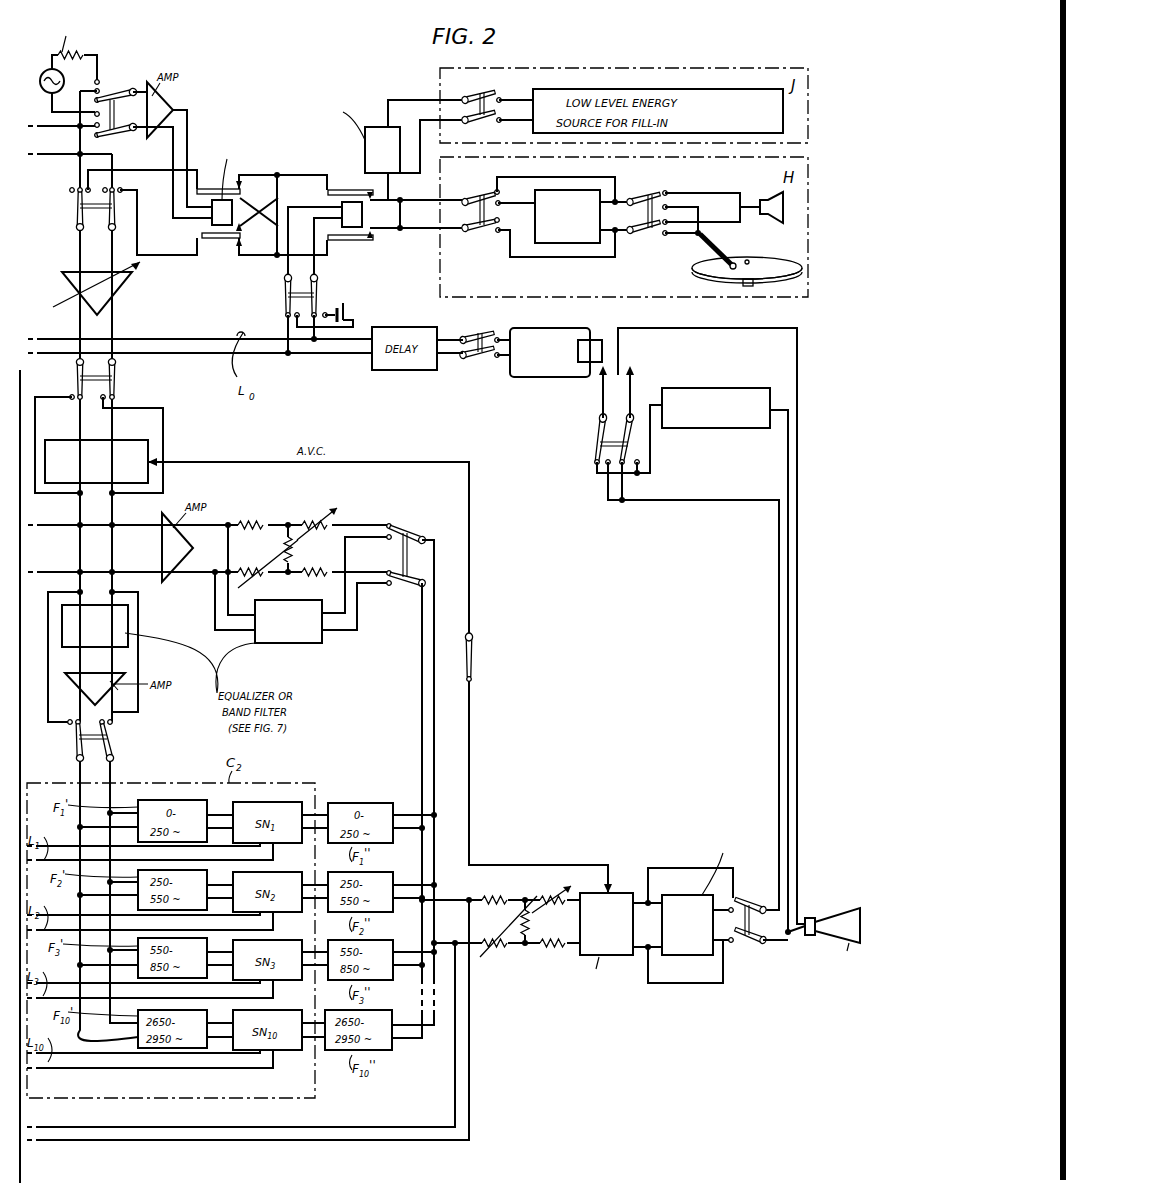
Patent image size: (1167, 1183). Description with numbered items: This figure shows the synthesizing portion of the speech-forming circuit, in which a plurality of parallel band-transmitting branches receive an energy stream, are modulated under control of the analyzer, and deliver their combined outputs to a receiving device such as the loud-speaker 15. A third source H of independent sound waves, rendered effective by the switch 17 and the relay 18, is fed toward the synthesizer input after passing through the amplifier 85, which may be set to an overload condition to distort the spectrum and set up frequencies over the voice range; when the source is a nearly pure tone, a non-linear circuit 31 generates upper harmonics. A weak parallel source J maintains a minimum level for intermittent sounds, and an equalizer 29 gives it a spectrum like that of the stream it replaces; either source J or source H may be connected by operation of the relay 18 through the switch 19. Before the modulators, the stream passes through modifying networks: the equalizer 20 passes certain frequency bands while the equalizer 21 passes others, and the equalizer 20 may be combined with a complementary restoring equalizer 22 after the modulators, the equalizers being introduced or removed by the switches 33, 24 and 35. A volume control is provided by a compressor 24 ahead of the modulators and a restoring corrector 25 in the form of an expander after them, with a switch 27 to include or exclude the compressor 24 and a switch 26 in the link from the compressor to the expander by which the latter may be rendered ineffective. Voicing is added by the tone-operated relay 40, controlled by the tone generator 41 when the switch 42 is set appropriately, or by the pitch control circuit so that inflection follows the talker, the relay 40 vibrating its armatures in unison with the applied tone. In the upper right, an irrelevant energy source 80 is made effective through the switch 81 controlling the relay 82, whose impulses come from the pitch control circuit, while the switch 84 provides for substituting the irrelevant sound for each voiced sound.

The loud-speaker 15 is at (834, 917).
The switch 17 is at (86, 220).
The relay 18 is at (356, 232).
The switch 19 is at (288, 290).
The equalizer 20 is at (128, 623).
The equalizer 21 is at (300, 643).
The restoring equalizer 22 is at (672, 955).
The compressor 24 is at (128, 440).
The restoring corrector 25 is at (620, 893).
The switch 26 is at (473, 658).
The switch 27 is at (104, 391).
The equalizer 29 is at (372, 127).
The non-linear circuit 31 is at (566, 243).
The switch 33 is at (100, 753).
The switch 35 is at (415, 546).
The tone-operated relay 40 is at (212, 224).
The tone generator 41 is at (49, 68).
The switch 42 is at (125, 106).
The irrelevant energy source 80 is at (758, 388).
The switch 81 is at (478, 360).
The relay 82 is at (578, 350).
The switch 84 is at (600, 437).
The amplifier 85 is at (119, 285).